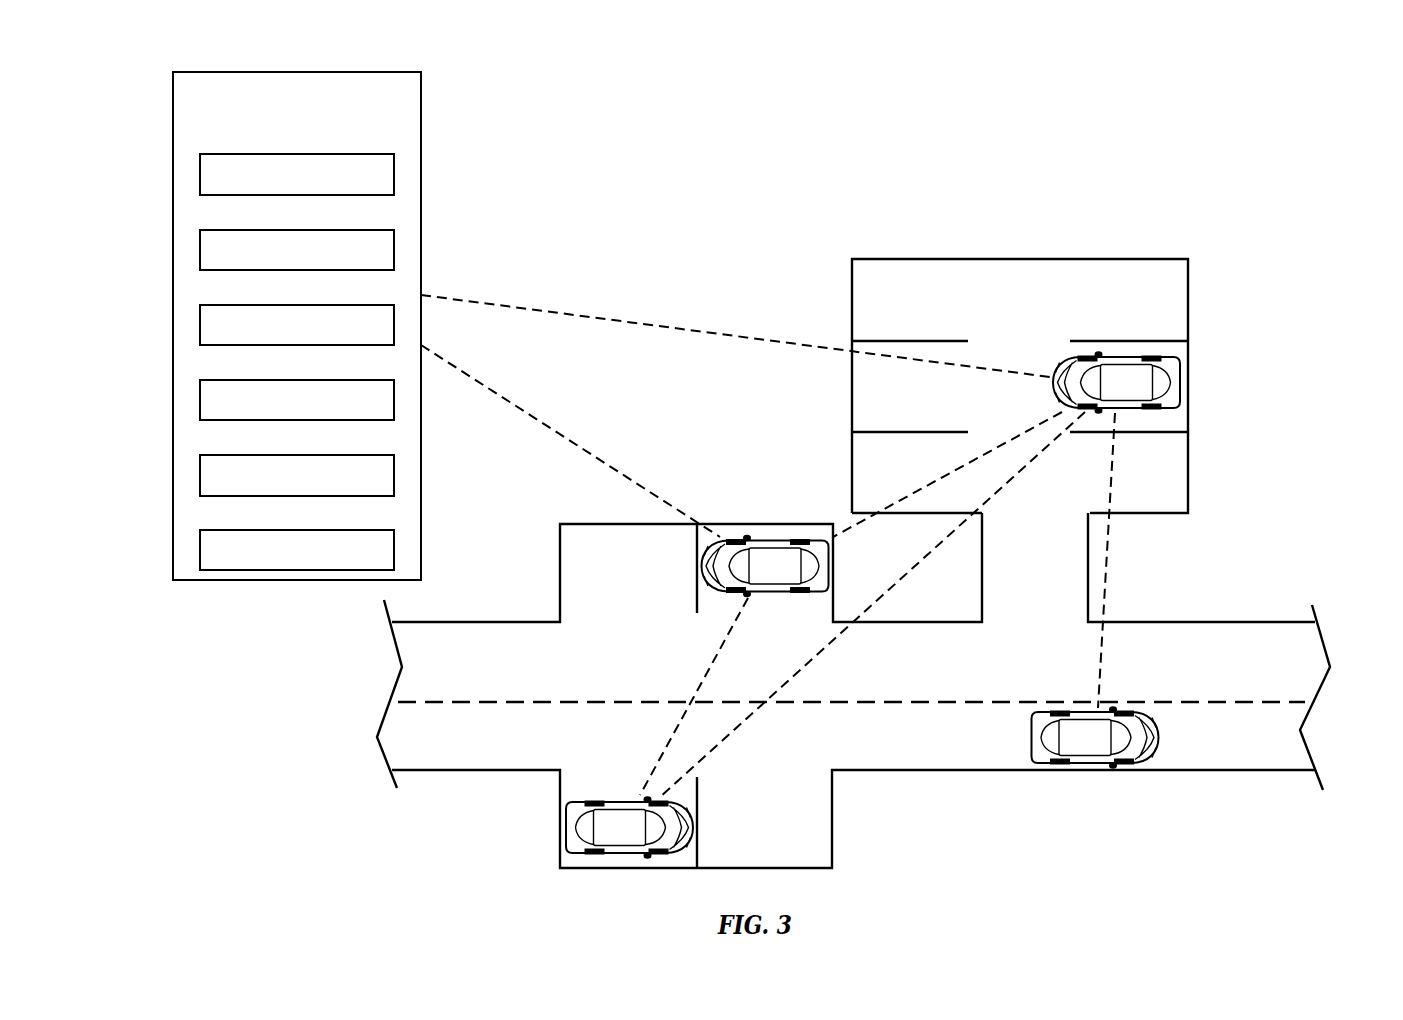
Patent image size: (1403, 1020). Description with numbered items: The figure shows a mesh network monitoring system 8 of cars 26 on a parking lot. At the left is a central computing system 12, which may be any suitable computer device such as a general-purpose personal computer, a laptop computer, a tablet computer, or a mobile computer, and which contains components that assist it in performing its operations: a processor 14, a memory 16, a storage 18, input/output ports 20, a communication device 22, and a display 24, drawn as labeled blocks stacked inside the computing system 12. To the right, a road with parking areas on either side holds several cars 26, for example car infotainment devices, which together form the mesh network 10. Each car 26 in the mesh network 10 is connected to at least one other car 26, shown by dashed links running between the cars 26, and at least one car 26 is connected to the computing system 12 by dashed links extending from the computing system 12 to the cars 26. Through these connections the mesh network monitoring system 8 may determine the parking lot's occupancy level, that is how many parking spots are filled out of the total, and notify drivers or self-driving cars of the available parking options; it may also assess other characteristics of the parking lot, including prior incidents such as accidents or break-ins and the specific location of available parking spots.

The mesh network monitoring system 8 is at (750, 52).
The mesh network 10 is at (790, 97).
The computing system 12 is at (297, 72).
The processor 14 is at (297, 154).
The memory 16 is at (297, 230).
The storage 18 is at (297, 305).
The input/output ports 20 is at (297, 380).
The communication device 22 is at (297, 455).
The display 24 is at (297, 530).
The car 26 is at (1072, 362).